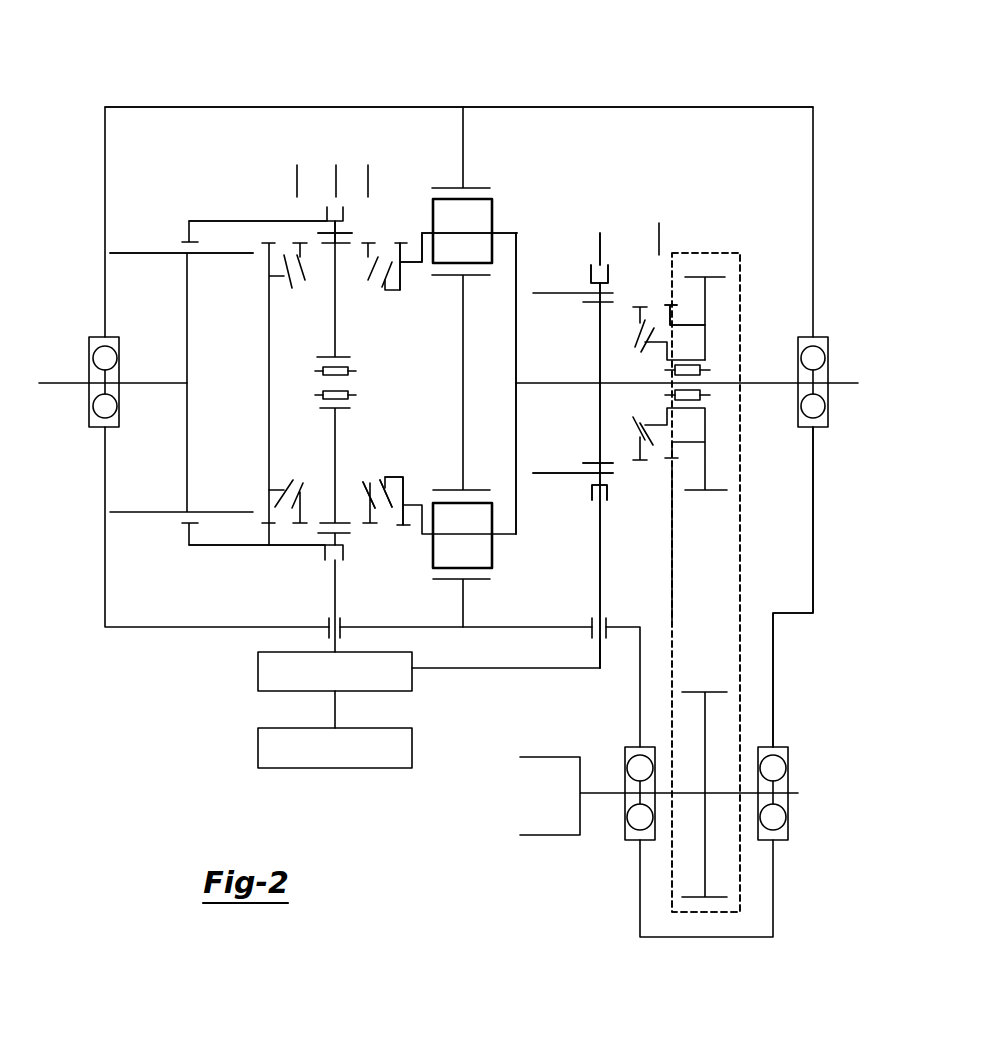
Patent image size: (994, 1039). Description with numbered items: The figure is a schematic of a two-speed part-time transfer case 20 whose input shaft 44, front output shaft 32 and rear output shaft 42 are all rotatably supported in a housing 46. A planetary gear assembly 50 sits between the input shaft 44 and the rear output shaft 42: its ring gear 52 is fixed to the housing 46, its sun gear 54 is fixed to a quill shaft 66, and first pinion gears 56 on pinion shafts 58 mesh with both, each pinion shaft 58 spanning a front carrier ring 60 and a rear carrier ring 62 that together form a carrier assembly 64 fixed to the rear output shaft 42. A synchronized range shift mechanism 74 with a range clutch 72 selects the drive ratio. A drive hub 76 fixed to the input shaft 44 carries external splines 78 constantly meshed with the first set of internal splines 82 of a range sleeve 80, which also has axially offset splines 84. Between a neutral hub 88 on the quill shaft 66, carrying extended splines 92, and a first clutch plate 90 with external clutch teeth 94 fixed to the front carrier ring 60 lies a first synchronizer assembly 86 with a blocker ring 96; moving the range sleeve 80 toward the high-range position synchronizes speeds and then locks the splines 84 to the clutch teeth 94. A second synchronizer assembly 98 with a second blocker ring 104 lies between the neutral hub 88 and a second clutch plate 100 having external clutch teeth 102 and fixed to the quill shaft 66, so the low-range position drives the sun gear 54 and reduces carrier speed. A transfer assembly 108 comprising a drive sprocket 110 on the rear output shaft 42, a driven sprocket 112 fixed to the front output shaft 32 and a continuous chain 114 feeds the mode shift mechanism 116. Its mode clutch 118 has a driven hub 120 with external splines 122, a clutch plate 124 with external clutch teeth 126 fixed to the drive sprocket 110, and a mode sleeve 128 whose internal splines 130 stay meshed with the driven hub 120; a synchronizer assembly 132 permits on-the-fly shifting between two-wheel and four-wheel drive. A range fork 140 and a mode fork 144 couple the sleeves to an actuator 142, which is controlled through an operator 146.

The transfer case 20 is at (814, 86).
The front output shaft 32 is at (597, 791).
The rear output shaft 42 is at (834, 383).
The input shaft 44 is at (82, 383).
The housing 46 is at (772, 107).
The planetary gear assembly 50 is at (592, 196).
The ring gear 52 is at (477, 183).
The sun gear 54 is at (463, 337).
The first pinion gears 56 is at (476, 212).
The pinion shaft 58 is at (497, 235).
The front carrier ring 60 is at (415, 238).
The rear carrier ring 62 is at (518, 237).
The carrier assembly 64 is at (517, 230).
The quill shaft 66 is at (396, 383).
The range clutch 72 is at (312, 565).
The synchronized range shift mechanism 74 is at (232, 653).
The drive hub 76 is at (187, 332).
The external splines 78 is at (162, 253).
The range sleeve 80 is at (264, 220).
The first set of internal splines 82 is at (190, 242).
The splines 84 is at (350, 523).
The first synchronizer assembly 86 is at (406, 468).
The neutral hub 88 is at (337, 290).
The first clutch plate 90 is at (402, 284).
The extended splines 92 is at (345, 238).
The external clutch teeth 94 is at (402, 526).
The blocker ring 96 is at (358, 500).
The second synchronizer assembly 98 is at (297, 474).
The second clutch plate 100 is at (270, 363).
The external clutch teeth 102 is at (270, 547).
The second blocker ring 104 is at (306, 258).
The transfer assembly 108 is at (745, 634).
The drive sprocket 110 is at (705, 307).
The driven sprocket 112 is at (705, 730).
The continuous chain 114 is at (743, 568).
The mode shift mechanism 116 is at (583, 503).
The mode clutch 118 is at (576, 273).
The driven hub 120 is at (600, 335).
The external splines 122 is at (589, 472).
The clutch plate 124 is at (675, 442).
The external clutch teeth 126 is at (668, 305).
The mode sleeve 128 is at (600, 486).
The internal splines 130 is at (596, 464).
The synchronizer assembly 132 is at (625, 333).
The range fork 140 is at (335, 586).
The actuator 142 is at (412, 692).
The mode fork 144 is at (598, 575).
The operator 146 is at (412, 768).